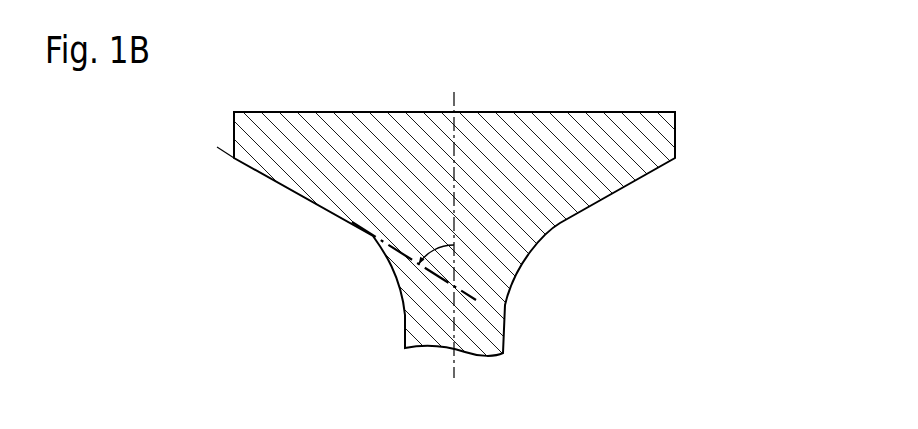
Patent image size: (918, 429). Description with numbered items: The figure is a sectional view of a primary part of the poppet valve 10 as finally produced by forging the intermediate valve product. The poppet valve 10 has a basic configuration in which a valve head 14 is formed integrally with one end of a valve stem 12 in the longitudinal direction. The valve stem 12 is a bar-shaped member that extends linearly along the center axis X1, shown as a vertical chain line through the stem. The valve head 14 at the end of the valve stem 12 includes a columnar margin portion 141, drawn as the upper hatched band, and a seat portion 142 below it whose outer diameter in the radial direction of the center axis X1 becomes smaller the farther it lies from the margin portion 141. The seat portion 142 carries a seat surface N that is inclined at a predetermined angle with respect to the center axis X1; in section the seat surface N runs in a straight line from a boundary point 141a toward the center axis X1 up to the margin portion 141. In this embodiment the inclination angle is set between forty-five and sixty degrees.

The poppet valve 10 is at (678, 100).
The valve stem 12 is at (493, 337).
The valve head 14 is at (750, 117).
The margin portion 141 is at (640, 138).
The seat portion 142 is at (600, 182).
The boundary point 141a is at (234, 158).
The seat surface N is at (307, 200).
The center axis X1 is at (454, 251).